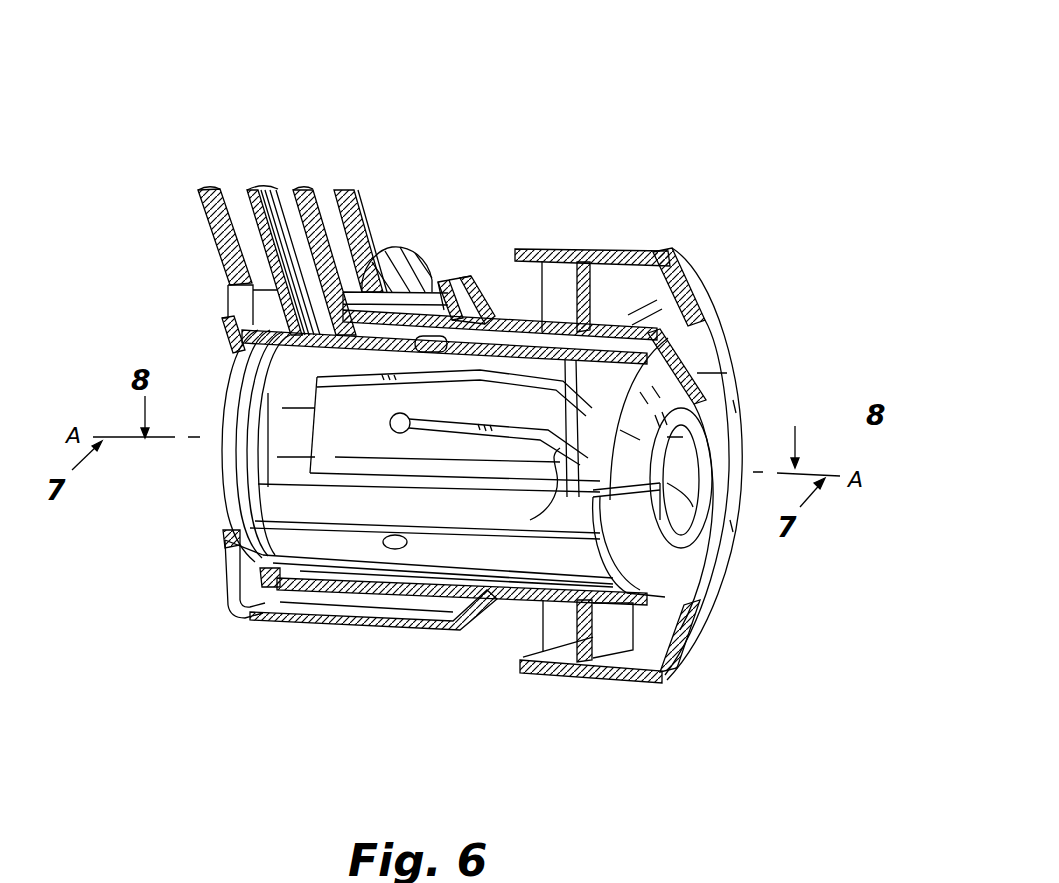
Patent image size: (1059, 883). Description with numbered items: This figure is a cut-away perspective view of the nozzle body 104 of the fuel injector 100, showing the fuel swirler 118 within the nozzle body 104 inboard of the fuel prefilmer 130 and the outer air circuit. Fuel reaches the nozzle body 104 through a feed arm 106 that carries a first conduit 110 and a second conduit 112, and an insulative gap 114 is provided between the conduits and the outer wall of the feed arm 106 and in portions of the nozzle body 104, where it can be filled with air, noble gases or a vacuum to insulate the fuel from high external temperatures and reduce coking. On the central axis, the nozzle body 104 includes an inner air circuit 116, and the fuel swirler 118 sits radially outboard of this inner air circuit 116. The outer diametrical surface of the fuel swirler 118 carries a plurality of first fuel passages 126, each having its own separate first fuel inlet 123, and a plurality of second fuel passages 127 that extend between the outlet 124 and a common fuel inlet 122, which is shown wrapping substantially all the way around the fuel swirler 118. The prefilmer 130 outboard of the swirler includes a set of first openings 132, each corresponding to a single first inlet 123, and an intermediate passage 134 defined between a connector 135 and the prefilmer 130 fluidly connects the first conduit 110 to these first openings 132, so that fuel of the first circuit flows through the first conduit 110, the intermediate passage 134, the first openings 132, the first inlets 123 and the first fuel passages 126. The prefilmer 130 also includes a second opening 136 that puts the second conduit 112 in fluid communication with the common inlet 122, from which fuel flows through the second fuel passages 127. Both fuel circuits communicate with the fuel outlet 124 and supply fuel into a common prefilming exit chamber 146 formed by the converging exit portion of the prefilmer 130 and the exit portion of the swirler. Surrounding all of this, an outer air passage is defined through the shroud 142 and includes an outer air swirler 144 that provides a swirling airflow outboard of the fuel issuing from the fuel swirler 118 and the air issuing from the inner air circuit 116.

The injector 100 is at (635, 103).
The nozzle body 104 is at (457, 620).
The feed arm 106 is at (200, 208).
The first conduit 110 is at (304, 196).
The second conduit 112 is at (282, 196).
The insulative gap 114 is at (373, 240).
The inner air circuit 116 is at (690, 495).
The fuel swirler 118 is at (220, 510).
The common fuel inlet 122 is at (295, 437).
The first fuel inlet 123 is at (394, 417).
The outlet 124 is at (613, 362).
The first fuel passages 126 is at (440, 443).
The second fuel passages 127 is at (330, 371).
The fuel prefilmer 130 is at (660, 420).
The first openings 132 is at (427, 347).
The intermediate passage 134 is at (407, 250).
The connector 135 is at (478, 290).
The second opening 136 is at (293, 332).
The shroud 142 is at (680, 273).
The outer air swirler 144 is at (543, 250).
The prefilming exit chamber 146 is at (620, 392).